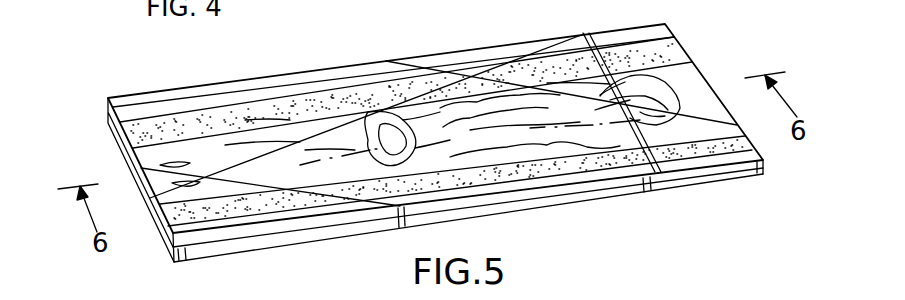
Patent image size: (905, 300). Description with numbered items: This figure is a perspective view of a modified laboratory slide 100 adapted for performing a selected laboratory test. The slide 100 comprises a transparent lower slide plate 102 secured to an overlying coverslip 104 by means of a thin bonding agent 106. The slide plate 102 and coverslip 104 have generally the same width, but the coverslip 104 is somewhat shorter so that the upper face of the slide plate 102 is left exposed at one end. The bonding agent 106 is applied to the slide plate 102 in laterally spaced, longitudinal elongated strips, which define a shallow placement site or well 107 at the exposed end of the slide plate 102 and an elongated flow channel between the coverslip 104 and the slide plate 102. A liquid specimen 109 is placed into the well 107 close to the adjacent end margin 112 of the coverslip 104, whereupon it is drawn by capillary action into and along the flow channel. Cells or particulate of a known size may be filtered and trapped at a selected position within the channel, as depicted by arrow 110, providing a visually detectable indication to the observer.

The modified laboratory slide 100 is at (773, 53).
The lower slide plate 102 is at (710, 177).
The coverslip 104 is at (463, 51).
The bonding agent 106 is at (670, 46).
The well 107 is at (690, 77).
The liquid specimen 109 is at (698, 101).
The arrow 110 is at (381, 122).
The end margin 112 is at (606, 28).